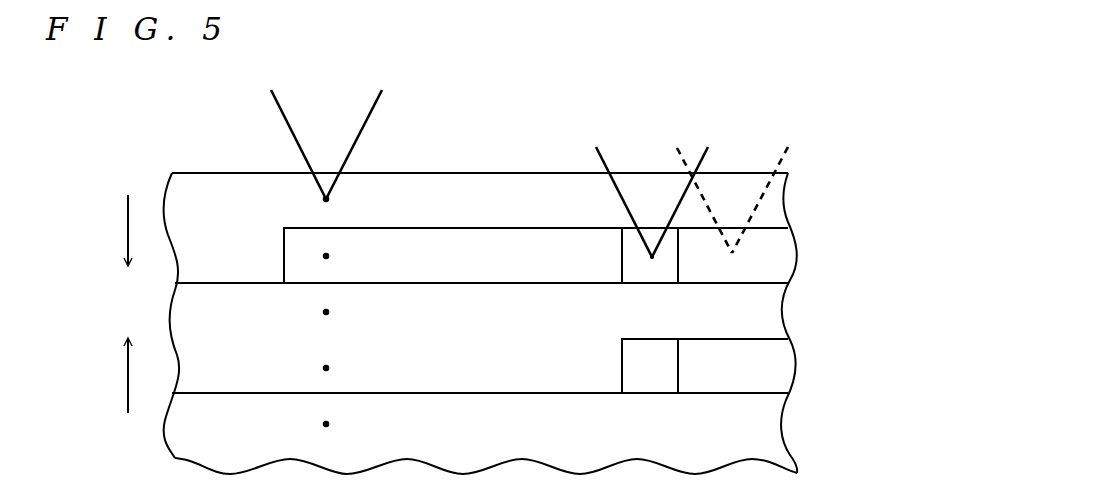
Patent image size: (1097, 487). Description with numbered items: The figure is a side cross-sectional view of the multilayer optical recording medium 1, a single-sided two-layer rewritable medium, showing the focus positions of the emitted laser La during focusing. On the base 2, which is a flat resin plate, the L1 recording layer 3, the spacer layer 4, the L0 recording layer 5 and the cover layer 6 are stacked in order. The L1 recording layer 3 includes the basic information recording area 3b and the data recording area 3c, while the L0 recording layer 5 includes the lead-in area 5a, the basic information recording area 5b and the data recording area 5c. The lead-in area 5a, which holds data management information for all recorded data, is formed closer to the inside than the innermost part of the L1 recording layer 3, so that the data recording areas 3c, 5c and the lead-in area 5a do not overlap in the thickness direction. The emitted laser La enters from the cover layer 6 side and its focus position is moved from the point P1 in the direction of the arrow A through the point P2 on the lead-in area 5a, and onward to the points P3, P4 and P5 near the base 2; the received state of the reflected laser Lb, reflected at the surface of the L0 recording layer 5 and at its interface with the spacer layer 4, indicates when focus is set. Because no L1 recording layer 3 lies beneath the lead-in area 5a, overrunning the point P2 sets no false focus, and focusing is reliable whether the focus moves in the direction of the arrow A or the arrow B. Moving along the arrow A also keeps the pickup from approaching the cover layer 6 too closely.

The multilayer optical recording medium 1 is at (472, 84).
The base 2 is at (769, 439).
The L1 recording layer 3 is at (769, 367).
The basic information recording area 3b is at (659, 380).
The data recording area 3c is at (755, 380).
The spacer layer 4 is at (769, 312).
The L0 recording layer 5 is at (769, 257).
The lead-in area 5a is at (436, 266).
The basic information recording area 5b is at (659, 272).
The data recording area 5c is at (755, 272).
The cover layer 6 is at (769, 202).
The emitted laser La is at (287, 128).
The reflected laser Lb is at (360, 142).
The point P1 is at (325, 199).
The point P2 is at (325, 256).
The point P3 is at (325, 312).
The point P4 is at (325, 368).
The point P5 is at (325, 424).
The arrow A is at (114, 230).
The arrow B is at (114, 375).